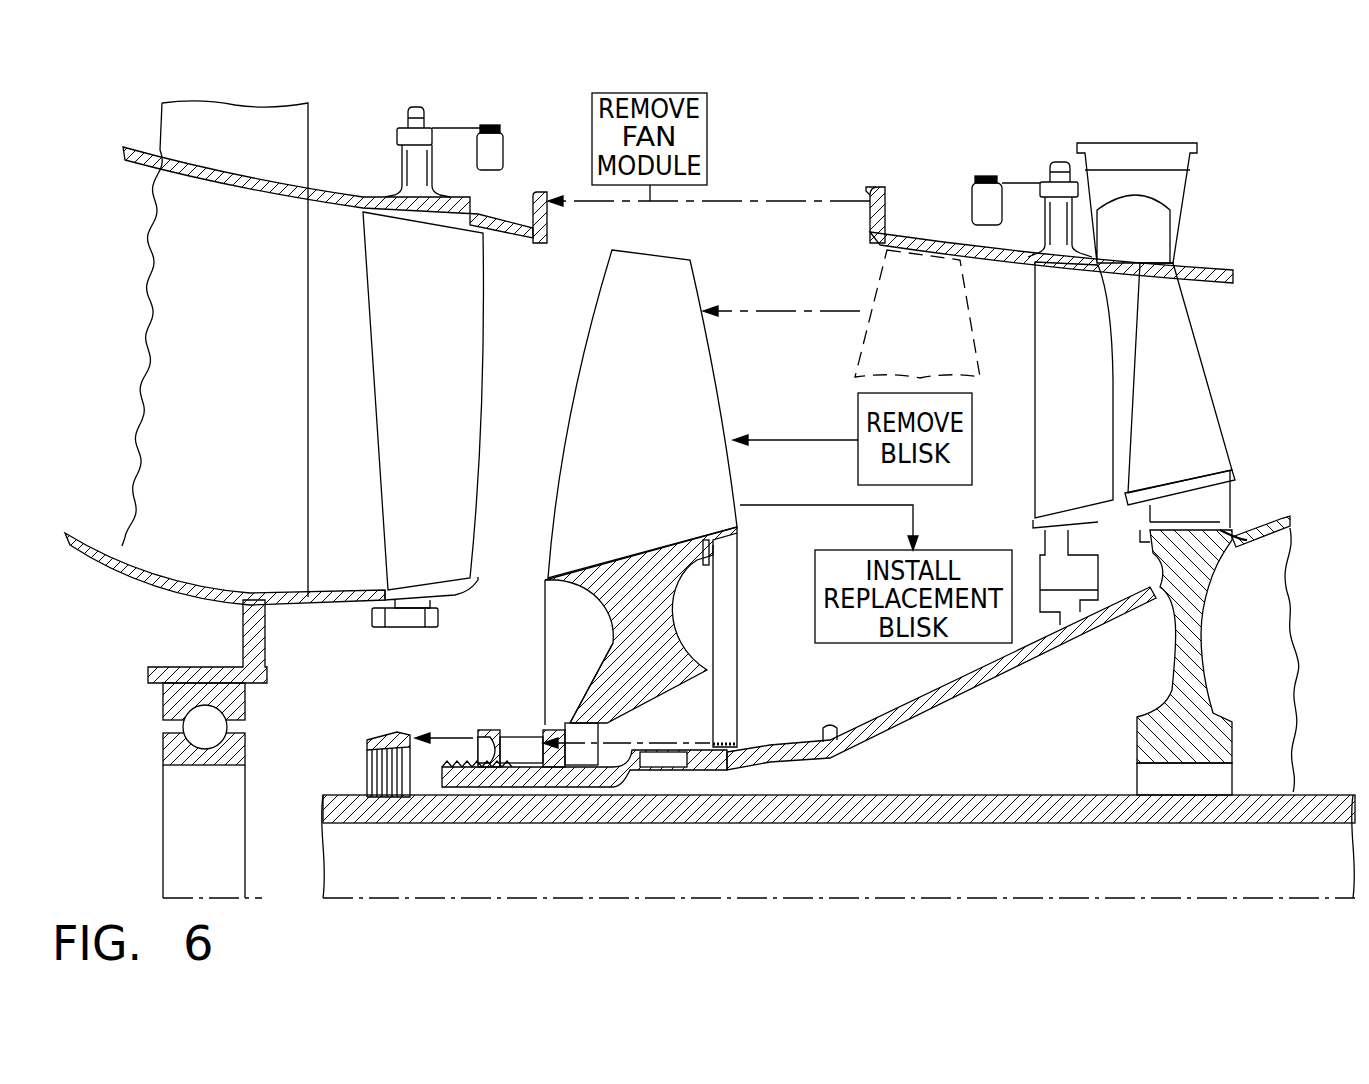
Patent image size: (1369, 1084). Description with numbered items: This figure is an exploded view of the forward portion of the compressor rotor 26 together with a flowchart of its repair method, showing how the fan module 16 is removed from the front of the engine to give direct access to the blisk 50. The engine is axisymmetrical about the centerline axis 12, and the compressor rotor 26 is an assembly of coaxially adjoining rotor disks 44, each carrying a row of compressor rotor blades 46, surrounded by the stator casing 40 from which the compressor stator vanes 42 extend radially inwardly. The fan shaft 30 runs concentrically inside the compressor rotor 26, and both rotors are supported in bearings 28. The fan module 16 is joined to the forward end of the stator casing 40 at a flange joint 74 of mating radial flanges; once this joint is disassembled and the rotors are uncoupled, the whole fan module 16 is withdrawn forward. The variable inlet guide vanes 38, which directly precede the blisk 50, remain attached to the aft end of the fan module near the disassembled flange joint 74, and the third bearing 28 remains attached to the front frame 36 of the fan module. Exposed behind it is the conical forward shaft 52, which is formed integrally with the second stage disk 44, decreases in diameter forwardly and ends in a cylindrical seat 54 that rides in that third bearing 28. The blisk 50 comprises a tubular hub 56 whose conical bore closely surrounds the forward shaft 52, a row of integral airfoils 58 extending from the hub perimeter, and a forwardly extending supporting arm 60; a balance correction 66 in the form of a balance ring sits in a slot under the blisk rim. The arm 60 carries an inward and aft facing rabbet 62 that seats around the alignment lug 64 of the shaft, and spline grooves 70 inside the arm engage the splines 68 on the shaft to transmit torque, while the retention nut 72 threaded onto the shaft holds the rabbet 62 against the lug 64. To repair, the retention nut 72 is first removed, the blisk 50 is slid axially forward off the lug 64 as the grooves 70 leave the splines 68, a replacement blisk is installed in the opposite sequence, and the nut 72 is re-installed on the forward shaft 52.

The centerline axis 12 is at (818, 893).
The fan module 16 is at (272, 150).
The compressor rotor 26 is at (1290, 516).
The bearings 28 is at (208, 738).
The fan shaft 30 is at (882, 793).
The front frame 36 is at (238, 326).
The variable inlet guide vanes 38 is at (444, 348).
The stator casing 40 is at (1210, 268).
The compressor stator vanes 42 is at (1091, 410).
The rotor disks 44 is at (1178, 655).
The compressor rotor blades 46 is at (1196, 405).
The blisk 50 is at (595, 614).
The forward shaft 52 is at (985, 675).
The seat 54 is at (530, 755).
The hub 56 is at (690, 632).
The integral airfoils 58 is at (661, 448).
The supporting arm 60 is at (582, 698).
The rabbet 62 is at (598, 732).
The lug 64 is at (833, 725).
The balance correction 66 is at (715, 563).
The splines 68 is at (790, 742).
The spline grooves 70 is at (513, 755).
The retention nut 72 is at (400, 735).
The flange joint 74 is at (882, 168).